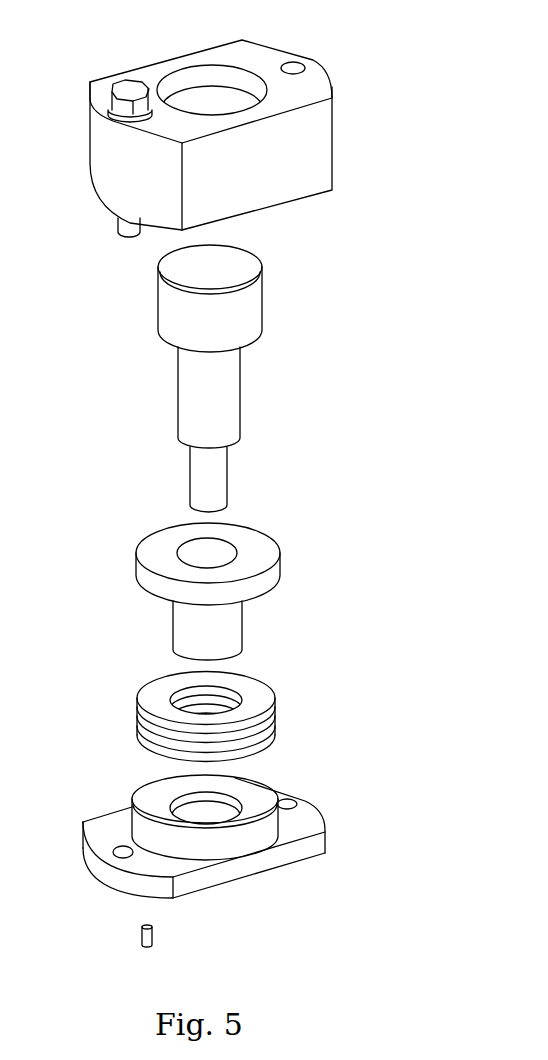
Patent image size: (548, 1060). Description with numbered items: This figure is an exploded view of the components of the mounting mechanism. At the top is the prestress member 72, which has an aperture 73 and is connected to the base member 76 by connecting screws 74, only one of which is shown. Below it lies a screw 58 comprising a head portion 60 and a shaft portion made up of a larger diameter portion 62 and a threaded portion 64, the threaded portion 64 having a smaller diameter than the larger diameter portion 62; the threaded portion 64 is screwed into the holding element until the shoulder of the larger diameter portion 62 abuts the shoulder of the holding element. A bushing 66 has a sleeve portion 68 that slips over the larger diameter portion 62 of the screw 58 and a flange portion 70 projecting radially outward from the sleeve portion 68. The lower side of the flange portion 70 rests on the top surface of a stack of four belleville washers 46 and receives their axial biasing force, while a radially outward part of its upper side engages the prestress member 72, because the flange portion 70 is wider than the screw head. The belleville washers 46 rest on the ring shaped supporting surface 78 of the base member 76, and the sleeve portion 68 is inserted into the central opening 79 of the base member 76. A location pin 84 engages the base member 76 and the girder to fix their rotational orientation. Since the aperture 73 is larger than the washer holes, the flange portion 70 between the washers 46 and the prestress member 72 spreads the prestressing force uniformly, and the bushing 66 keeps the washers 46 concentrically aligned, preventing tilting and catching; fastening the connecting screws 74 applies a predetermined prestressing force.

The belleville washers 46 is at (262, 705).
The screw 58 is at (263, 378).
The head portion 60 is at (250, 297).
The larger diameter portion 62 is at (239, 393).
The threaded portion 64 is at (217, 477).
The bushing 66 is at (269, 588).
The sleeve portion 68 is at (317, 608).
The flange portion 70 is at (265, 557).
The prestress member 72 is at (250, 151).
The aperture 73 is at (228, 92).
The connecting screws 74 is at (121, 220).
The base member 76 is at (242, 869).
The ring shaped supporting surface 78 is at (148, 810).
The central opening 79 is at (212, 815).
The location pin 84 is at (142, 937).